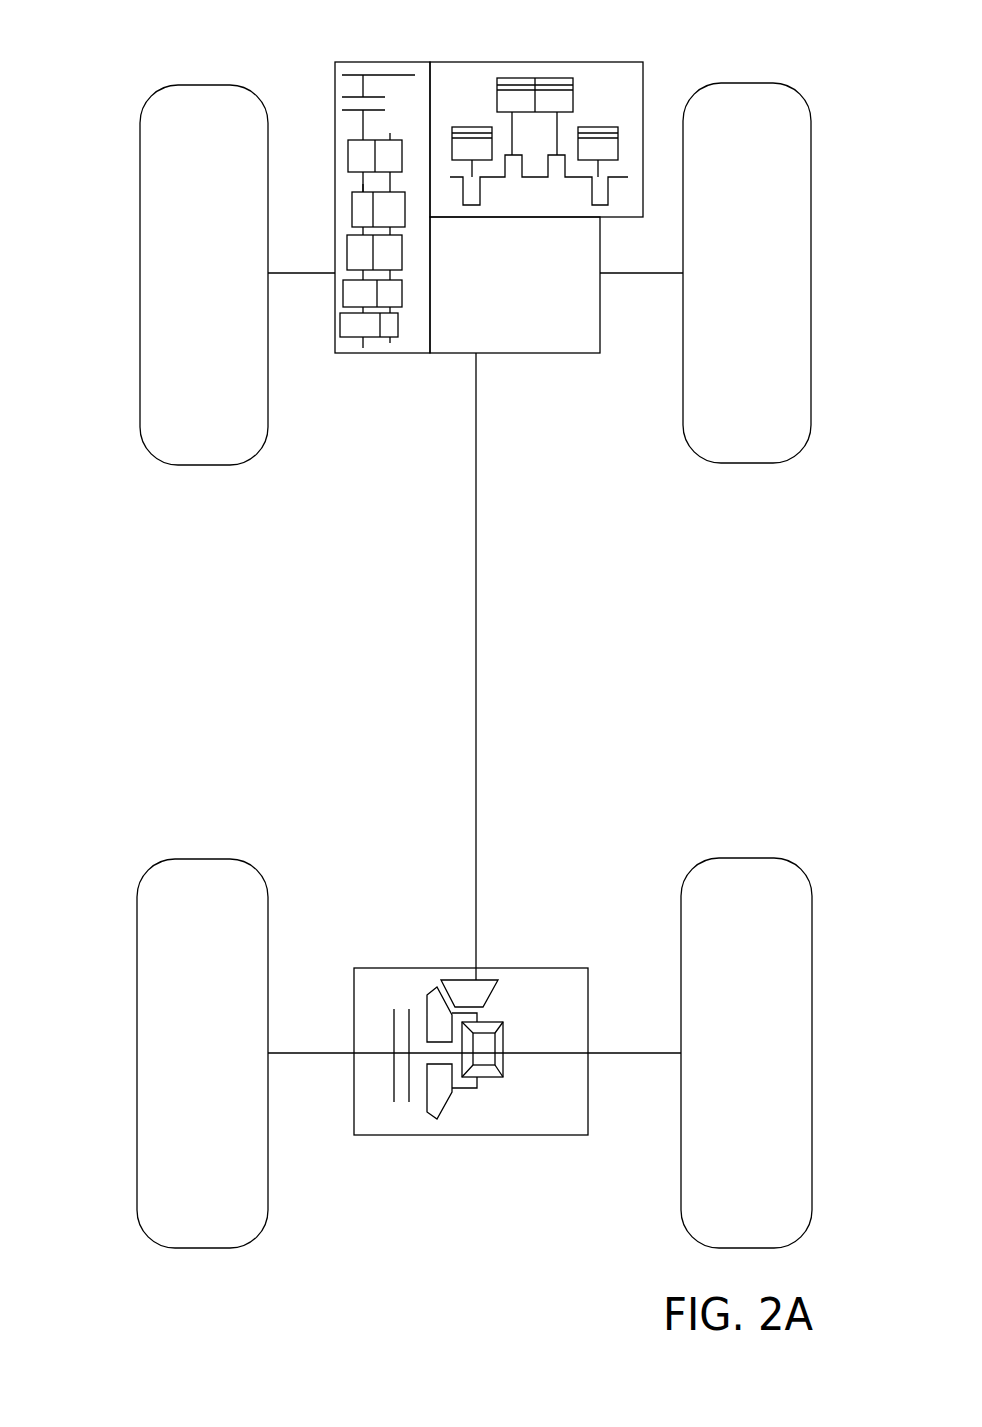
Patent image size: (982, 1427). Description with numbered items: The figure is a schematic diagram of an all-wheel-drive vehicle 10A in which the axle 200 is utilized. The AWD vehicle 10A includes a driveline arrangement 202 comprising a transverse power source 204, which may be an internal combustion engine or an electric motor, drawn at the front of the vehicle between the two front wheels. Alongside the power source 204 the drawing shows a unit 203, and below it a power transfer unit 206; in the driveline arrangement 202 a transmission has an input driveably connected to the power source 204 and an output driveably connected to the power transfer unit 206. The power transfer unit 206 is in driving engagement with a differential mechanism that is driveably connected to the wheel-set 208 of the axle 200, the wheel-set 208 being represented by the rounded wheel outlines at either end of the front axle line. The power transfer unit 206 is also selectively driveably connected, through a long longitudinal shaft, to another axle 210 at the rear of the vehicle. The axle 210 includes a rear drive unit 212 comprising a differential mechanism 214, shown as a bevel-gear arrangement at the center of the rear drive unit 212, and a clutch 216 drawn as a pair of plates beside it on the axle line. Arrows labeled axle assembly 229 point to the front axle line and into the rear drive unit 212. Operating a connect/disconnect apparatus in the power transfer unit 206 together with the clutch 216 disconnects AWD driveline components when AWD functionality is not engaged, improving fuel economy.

The AWD vehicle 10A is at (741, 38).
The axle 200 is at (292, 56).
The driveline arrangement 202 is at (720, 612).
The battery pack 203 is at (390, 72).
The power source 204 is at (608, 86).
The power transfer unit 206 is at (543, 362).
The wheel-set 208 is at (150, 175).
The axle 210 is at (312, 838).
The rear drive unit 212 is at (563, 981).
The differential mechanism 214 is at (484, 1078).
The clutch 216 is at (402, 1027).
The axle assembly 229 is at (659, 248).